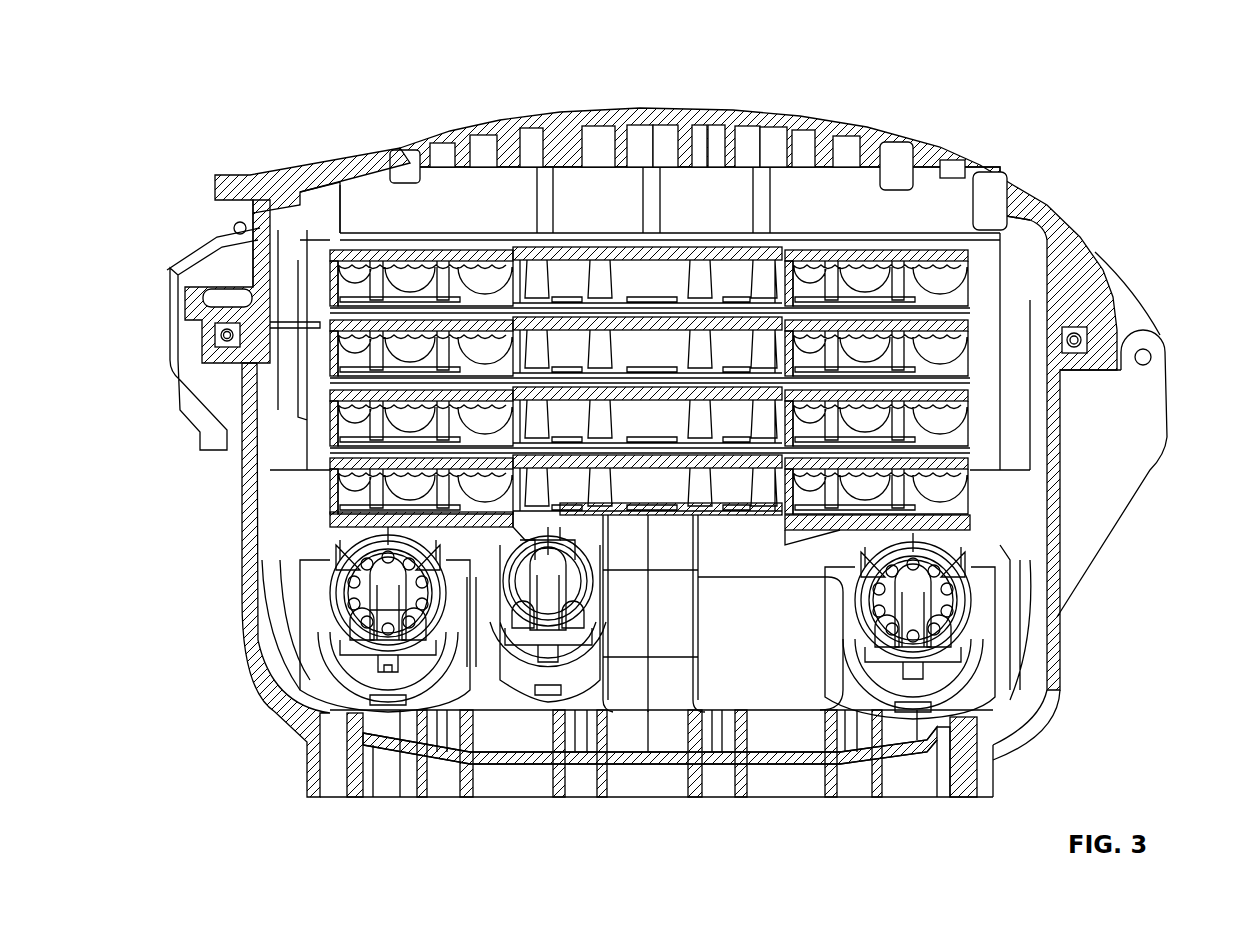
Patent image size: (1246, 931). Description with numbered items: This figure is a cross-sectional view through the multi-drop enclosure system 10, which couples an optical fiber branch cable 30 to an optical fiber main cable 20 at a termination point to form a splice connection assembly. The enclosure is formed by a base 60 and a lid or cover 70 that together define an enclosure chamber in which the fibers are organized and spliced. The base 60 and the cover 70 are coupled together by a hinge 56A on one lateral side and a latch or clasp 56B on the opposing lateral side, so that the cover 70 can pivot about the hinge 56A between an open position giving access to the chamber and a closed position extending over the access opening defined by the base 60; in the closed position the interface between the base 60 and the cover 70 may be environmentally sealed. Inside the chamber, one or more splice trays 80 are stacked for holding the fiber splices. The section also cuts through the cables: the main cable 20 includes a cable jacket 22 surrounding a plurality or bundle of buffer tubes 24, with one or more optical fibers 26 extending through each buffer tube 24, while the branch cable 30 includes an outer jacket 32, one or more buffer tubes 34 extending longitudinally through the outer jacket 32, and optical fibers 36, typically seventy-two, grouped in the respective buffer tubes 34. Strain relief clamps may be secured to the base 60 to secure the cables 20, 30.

The multi-drop enclosure system 10 is at (172, 100).
The optical fiber main cable 20 is at (332, 570).
The cable jacket 22 is at (350, 597).
The buffer tubes 24 is at (352, 625).
The optical fibers 26 is at (347, 605).
The optical fiber branch cable 30 is at (598, 572).
The outer jacket 32 is at (470, 636).
The buffer tubes 34 is at (523, 585).
The optical fibers 36 is at (516, 600).
The hinge 56A is at (1145, 338).
The latch or clasp 56B is at (293, 172).
The base 60 is at (758, 765).
The cover 70 is at (713, 115).
The splice trays 80 is at (725, 292).